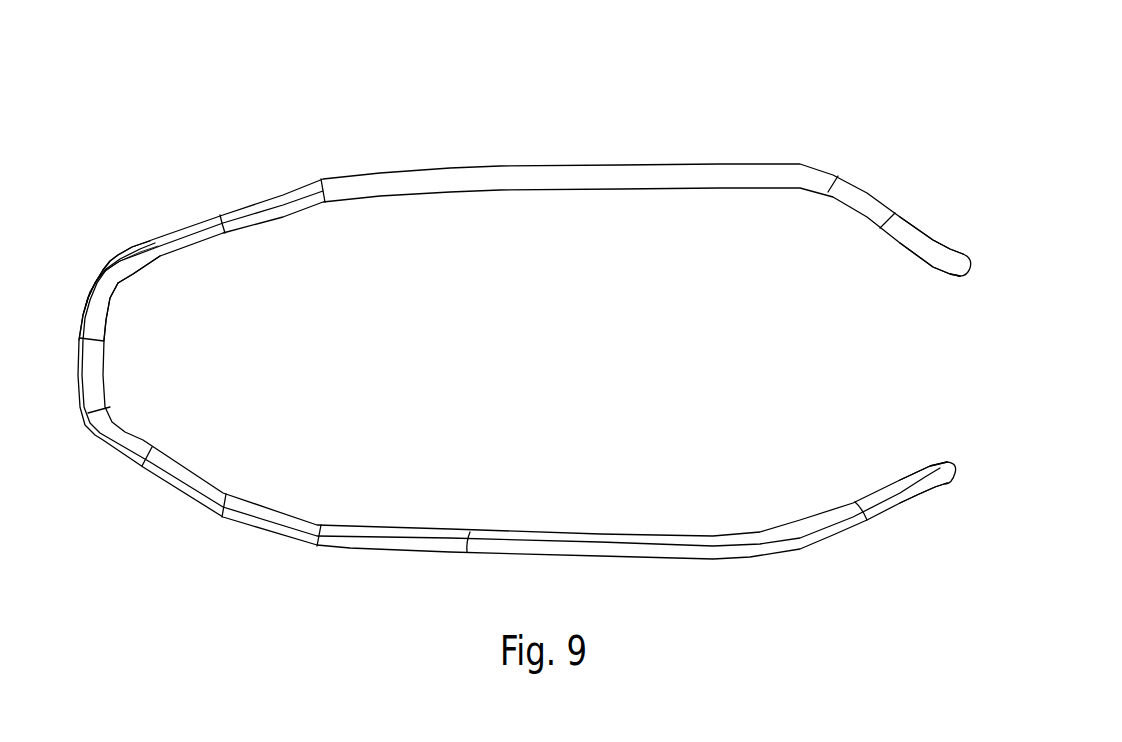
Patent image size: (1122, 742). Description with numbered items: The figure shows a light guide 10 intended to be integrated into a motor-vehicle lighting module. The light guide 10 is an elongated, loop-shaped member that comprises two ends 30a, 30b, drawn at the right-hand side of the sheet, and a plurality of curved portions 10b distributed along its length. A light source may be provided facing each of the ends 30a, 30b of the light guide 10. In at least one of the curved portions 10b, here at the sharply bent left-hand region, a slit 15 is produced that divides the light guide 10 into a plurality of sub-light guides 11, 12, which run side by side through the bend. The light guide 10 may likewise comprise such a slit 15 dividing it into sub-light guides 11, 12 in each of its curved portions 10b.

The light guide 10 is at (448, 175).
The curved portions 10b is at (163, 276).
The sub-light guide 11 is at (115, 280).
The sub-light guide 12 is at (105, 267).
The slit 15 is at (121, 244).
The end 30a is at (955, 229).
The end 30b is at (943, 441).